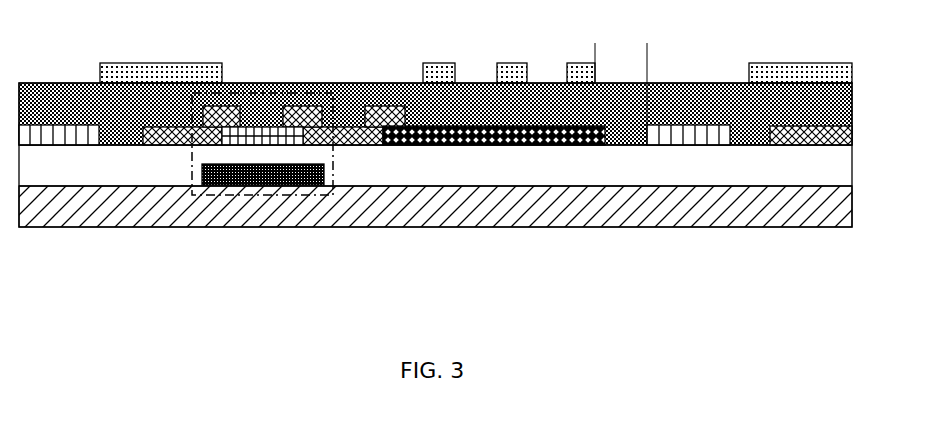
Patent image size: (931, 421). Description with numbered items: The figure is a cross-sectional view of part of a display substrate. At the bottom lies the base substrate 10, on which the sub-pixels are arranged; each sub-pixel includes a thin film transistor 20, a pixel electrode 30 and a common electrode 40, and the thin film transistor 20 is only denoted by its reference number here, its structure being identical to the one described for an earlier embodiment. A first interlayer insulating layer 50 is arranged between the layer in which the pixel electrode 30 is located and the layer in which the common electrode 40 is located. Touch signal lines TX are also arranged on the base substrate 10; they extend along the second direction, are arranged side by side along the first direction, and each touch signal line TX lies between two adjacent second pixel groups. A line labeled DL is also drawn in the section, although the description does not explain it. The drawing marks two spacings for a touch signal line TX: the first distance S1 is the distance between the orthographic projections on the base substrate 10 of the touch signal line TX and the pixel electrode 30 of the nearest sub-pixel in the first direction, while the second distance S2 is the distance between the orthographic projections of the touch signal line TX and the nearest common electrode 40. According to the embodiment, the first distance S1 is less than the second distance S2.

The base substrate 10 is at (157, 186).
The thin film transistor 20 is at (271, 195).
The pixel electrode 30 is at (425, 145).
The common electrode 40 is at (517, 83).
The first interlayer insulating layer 50 is at (749, 83).
The touch signal line TX is at (60, 145).
The data line DL is at (816, 126).
The first distance S1 is at (646, 137).
The second distance S2 is at (646, 54).